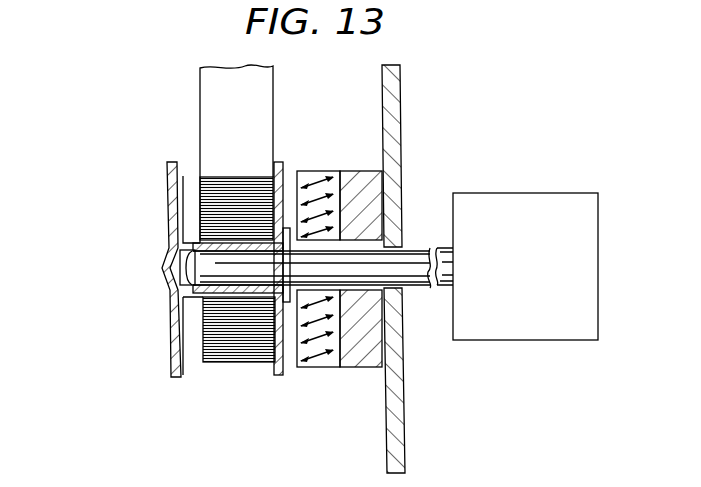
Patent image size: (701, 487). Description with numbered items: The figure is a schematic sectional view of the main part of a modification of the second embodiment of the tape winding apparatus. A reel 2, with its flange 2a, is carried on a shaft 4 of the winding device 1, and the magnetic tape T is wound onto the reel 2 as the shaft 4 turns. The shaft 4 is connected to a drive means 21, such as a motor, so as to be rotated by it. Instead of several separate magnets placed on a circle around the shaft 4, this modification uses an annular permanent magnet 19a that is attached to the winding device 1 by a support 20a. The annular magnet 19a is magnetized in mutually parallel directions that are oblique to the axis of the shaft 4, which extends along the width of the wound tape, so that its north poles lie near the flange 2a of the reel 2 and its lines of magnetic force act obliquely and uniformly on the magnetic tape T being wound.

The magnetic tape T is at (200, 103).
The reel 2 is at (166, 321).
The flange 2a is at (283, 172).
The annular permanent magnet 19a is at (321, 367).
The support 20a is at (366, 367).
The winding device 1 is at (401, 443).
The shaft 4 is at (410, 250).
The drive means 21 is at (557, 193).